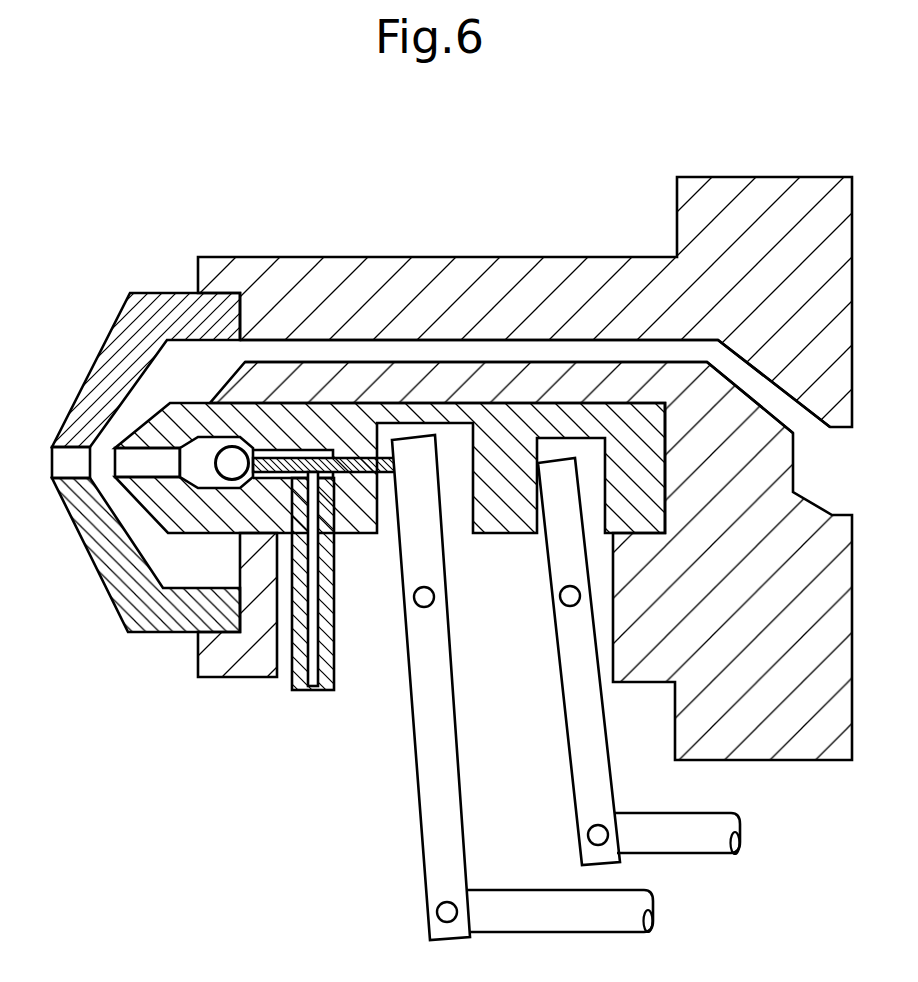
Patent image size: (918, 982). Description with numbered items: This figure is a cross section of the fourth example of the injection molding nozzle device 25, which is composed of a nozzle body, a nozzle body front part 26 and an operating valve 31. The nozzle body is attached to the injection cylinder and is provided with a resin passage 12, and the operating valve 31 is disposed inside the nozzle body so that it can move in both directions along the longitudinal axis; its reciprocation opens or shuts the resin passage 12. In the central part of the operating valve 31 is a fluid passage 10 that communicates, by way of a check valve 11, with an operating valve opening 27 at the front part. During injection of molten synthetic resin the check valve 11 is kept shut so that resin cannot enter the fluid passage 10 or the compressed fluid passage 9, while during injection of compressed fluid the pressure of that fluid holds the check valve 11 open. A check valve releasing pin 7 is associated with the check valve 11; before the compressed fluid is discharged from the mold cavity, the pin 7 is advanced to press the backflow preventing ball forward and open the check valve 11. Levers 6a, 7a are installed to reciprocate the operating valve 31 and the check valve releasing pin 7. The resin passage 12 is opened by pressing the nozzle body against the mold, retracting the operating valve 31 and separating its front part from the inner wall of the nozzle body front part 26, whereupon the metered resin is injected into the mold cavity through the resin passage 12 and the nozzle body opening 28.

The injection molding nozzle device 25 is at (552, 190).
The resin passage 12 is at (450, 353).
The operating valve 31 is at (302, 395).
The fluid passage 10 is at (193, 460).
The nozzle body front part 26 is at (102, 348).
The nozzle body opening 28 is at (57, 462).
The operating valve opening 27 is at (137, 460).
The check valve 11 is at (230, 470).
The compressed fluid passage 9 is at (312, 690).
The check valve releasing pin 7 is at (360, 470).
The lever 7a is at (427, 783).
The lever 6a is at (580, 720).